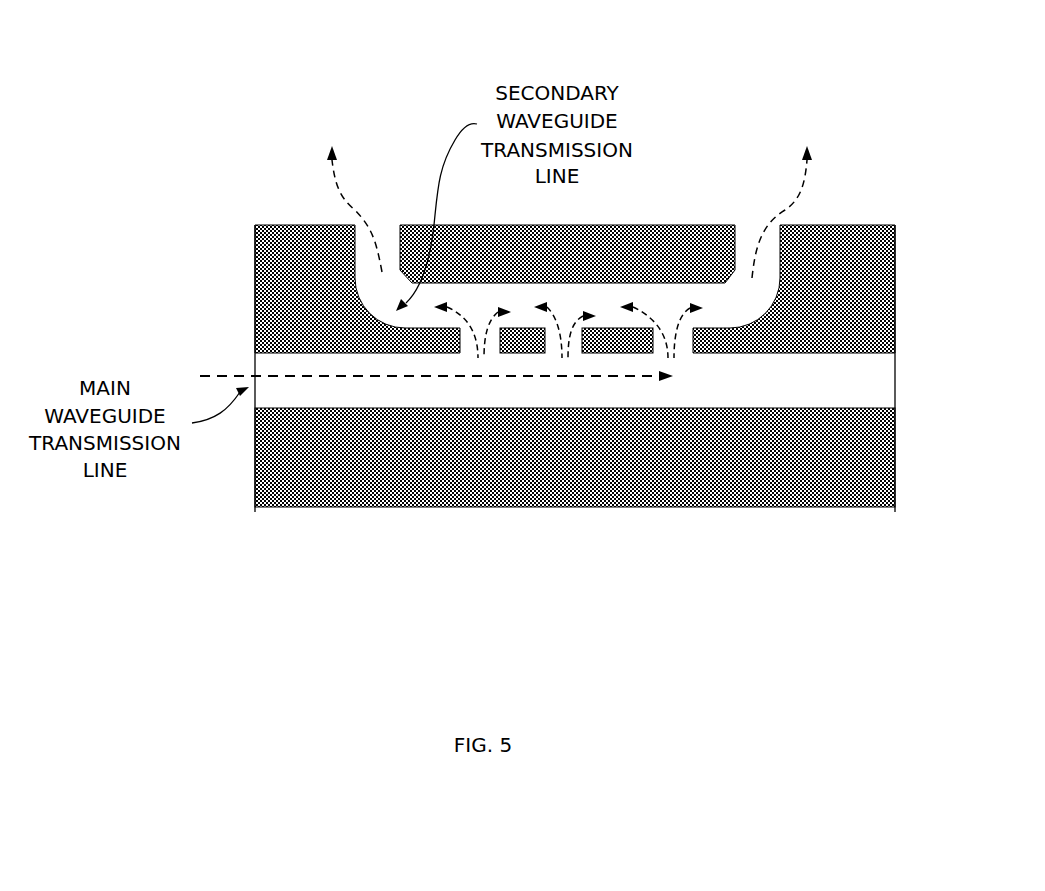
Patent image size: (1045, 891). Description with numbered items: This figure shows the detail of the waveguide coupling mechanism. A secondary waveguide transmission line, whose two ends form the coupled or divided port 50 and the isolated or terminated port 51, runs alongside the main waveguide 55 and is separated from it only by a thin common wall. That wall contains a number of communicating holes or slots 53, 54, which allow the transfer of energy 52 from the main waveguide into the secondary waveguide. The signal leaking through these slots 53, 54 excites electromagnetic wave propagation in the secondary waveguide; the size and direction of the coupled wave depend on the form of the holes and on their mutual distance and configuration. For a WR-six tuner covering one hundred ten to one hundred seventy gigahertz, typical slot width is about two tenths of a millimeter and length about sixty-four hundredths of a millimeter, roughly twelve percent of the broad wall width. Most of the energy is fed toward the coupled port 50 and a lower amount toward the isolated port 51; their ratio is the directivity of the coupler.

The secondary waveguide coupled port 50 is at (377, 207).
The secondary waveguide isolated port 51 is at (758, 218).
The transfer of energy 52 is at (332, 377).
The coupling slot 53 is at (488, 343).
The coupling slot 54 is at (572, 343).
The main waveguide 55 is at (812, 377).